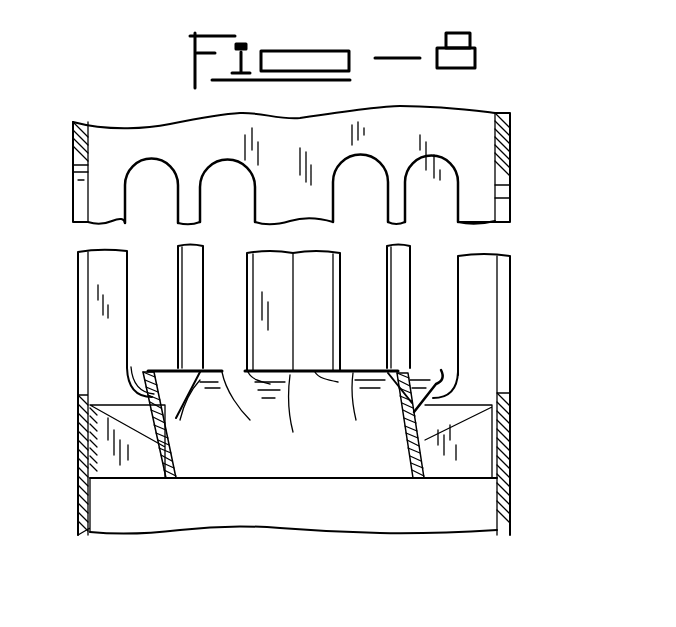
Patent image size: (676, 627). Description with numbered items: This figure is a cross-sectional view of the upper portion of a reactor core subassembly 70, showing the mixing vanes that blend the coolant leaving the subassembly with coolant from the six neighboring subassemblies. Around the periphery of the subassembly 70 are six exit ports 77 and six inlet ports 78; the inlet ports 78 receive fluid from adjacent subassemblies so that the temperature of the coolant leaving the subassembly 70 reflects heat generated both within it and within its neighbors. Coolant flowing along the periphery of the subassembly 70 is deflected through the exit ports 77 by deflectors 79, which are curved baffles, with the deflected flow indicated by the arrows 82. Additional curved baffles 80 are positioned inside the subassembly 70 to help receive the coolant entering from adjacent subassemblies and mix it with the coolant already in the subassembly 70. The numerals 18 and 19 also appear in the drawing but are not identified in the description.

The subassembly 70 is at (514, 151).
The exit ports 77 is at (148, 160).
The inlet ports 78 is at (216, 160).
The slot 18 is at (412, 204).
The bracket strip 19 is at (148, 372).
The deflectors 79 is at (315, 383).
The curved baffles 80 is at (190, 395).
The arrows 82 is at (143, 465).